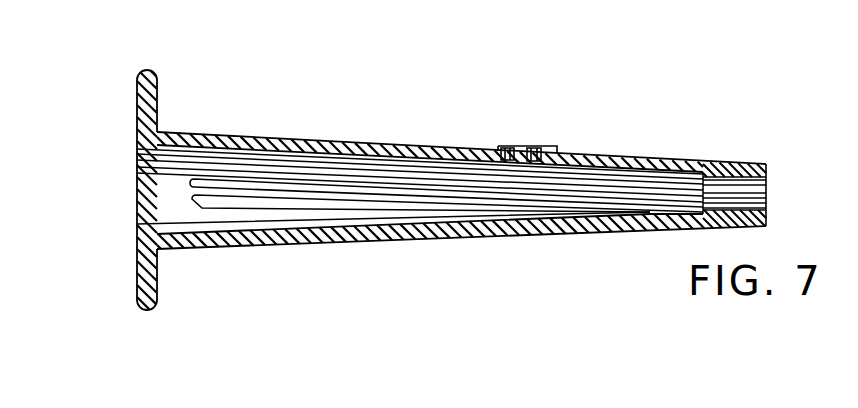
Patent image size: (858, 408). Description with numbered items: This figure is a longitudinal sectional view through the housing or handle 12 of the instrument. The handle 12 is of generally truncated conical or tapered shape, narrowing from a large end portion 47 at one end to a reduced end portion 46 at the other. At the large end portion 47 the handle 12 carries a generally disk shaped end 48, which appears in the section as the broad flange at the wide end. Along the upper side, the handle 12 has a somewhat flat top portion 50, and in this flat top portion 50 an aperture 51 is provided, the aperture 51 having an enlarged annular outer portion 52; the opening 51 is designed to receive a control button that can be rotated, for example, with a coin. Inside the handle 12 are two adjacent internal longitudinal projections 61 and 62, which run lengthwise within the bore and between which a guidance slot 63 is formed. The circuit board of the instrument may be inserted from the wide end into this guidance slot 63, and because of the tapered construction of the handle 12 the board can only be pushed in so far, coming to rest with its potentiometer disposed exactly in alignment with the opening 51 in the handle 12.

The handle 12 is at (619, 152).
The reduced end portion 46 is at (722, 163).
The large end portion 47 is at (176, 133).
The disk shaped end 48 is at (158, 86).
The flat top portion 50 is at (393, 144).
The aperture 51 is at (531, 146).
The enlarged annular outer portion 52 is at (497, 146).
The longitudinal projection 61 is at (191, 200).
The longitudinal projection 62 is at (189, 183).
The guidance slot 63 is at (238, 188).